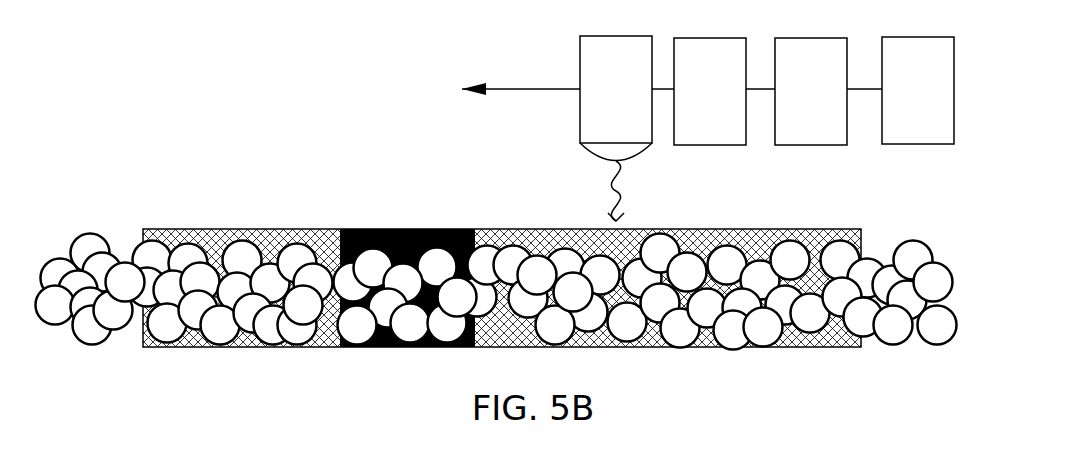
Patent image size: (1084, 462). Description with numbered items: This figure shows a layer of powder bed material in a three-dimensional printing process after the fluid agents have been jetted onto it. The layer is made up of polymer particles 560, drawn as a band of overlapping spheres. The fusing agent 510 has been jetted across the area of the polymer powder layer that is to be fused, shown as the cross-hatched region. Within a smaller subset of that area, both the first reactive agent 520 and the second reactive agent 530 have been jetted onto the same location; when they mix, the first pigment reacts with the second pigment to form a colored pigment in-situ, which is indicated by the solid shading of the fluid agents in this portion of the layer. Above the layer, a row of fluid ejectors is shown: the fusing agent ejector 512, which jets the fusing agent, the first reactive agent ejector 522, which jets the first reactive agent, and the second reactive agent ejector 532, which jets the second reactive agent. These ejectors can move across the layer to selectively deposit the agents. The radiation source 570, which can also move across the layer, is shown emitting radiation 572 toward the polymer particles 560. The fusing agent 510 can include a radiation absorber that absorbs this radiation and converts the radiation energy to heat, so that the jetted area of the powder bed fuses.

The fusing agent 510 is at (270, 235).
The first reactive agent 520 is at (363, 237).
The second reactive agent 530 is at (428, 228).
The polymer particles 560 is at (83, 242).
The radiation source 570 is at (594, 103).
The radiation 572 is at (608, 212).
The second reactive agent ejector 532 is at (688, 103).
The first reactive agent ejector 522 is at (789, 103).
The fusing agent ejector 512 is at (896, 103).